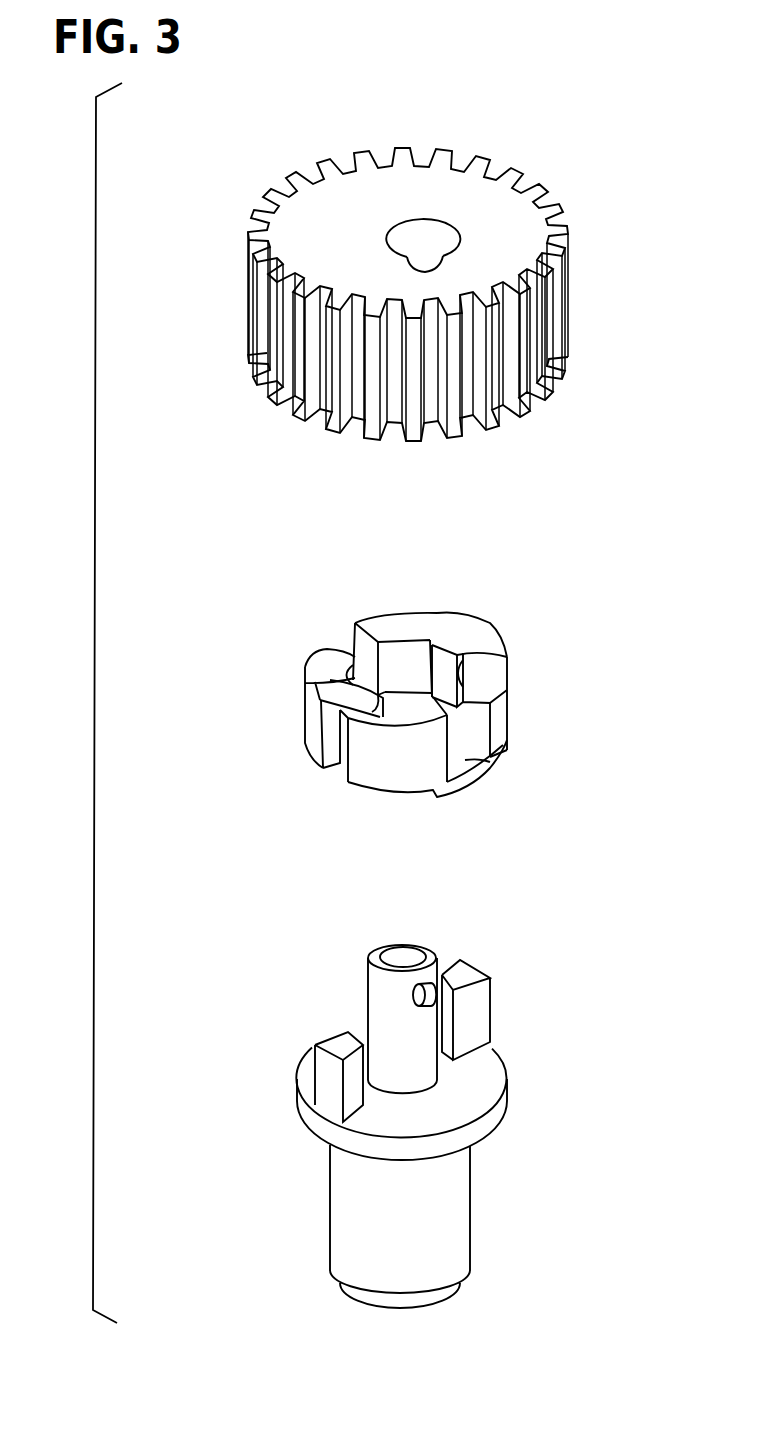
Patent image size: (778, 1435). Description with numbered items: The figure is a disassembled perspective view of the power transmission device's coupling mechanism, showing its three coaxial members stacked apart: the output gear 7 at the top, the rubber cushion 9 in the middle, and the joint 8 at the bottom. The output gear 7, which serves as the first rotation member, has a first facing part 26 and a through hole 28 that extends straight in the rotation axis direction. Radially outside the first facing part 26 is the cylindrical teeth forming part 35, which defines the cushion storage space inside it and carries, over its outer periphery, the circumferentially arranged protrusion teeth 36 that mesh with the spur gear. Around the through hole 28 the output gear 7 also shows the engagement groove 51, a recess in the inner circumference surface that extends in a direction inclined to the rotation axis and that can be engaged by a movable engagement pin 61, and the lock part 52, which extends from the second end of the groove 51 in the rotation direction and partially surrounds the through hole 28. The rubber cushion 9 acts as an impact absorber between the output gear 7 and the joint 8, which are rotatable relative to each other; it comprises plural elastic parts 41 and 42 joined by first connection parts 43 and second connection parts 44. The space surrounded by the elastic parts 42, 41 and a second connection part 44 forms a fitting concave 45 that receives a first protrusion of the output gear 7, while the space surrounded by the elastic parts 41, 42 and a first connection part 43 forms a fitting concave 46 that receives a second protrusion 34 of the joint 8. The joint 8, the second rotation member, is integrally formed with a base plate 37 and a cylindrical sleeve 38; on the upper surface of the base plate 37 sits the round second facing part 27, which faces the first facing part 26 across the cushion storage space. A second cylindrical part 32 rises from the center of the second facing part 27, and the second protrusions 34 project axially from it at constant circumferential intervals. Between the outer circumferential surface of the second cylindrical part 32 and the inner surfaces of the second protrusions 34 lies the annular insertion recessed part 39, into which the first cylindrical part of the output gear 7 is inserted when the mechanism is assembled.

The output gear 7 is at (280, 168).
The first facing part 26 is at (480, 223).
The through hole 28 is at (393, 240).
The teeth forming part 35 is at (525, 223).
The protrusion teeth 36 is at (550, 343).
The engagement groove 51 is at (405, 258).
The lock part 52 is at (448, 250).
The rubber cushion 9 is at (288, 732).
The elastic part 41 is at (317, 657).
The elastic part 42 is at (393, 622).
The first connection part 43 is at (458, 623).
The second connection part 44 is at (347, 722).
The fitting concave 45 is at (367, 667).
The fitting concave 46 is at (443, 663).
The joint 8 is at (315, 1265).
The second cylindrical part 32 is at (385, 1018).
The second protrusion 34 is at (493, 993).
The engagement pin 61 is at (470, 1008).
The second facing part 27 is at (465, 1090).
The base plate 37 is at (495, 1113).
The cylindrical sleeve 38 is at (472, 1225).
The insertion recessed part 39 is at (373, 1095).